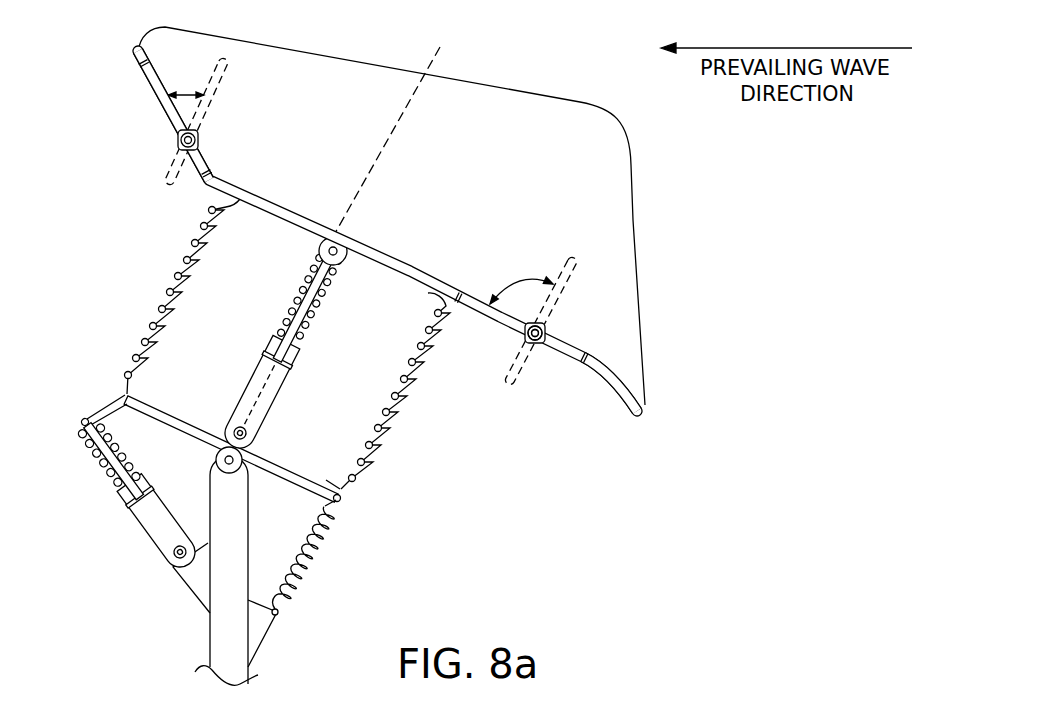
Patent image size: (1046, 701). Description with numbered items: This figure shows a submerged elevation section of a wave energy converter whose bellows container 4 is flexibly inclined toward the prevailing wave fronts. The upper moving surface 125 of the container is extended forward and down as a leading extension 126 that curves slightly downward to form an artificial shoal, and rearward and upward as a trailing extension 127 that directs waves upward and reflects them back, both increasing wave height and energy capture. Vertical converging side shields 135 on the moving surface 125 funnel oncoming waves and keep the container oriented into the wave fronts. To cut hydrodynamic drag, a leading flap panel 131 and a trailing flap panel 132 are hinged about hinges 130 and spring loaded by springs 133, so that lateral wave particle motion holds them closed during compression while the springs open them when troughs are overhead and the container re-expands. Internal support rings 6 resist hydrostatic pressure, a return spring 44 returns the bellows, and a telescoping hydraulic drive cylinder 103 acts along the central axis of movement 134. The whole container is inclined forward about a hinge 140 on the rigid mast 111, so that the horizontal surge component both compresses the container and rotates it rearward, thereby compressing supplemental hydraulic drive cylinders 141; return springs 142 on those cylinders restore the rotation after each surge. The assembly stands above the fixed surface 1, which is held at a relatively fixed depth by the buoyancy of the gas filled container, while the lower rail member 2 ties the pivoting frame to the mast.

The fixed surface 1 is at (179, 416).
The bow member 2 is at (268, 212).
The bellows container 4 is at (343, 393).
The support rings 6 is at (177, 273).
The return spring 44 is at (327, 308).
The hydraulic drive cylinder 103 is at (268, 426).
The mast 111 is at (208, 637).
The upper moving surface 125 is at (373, 251).
The leading extension 126 is at (613, 367).
The trailing extension 127 is at (134, 55).
The hinge 130 is at (542, 344).
The leading flap panel 131 is at (476, 298).
The trailing flap panel 132 is at (207, 148).
The spring 133 is at (176, 133).
The central axis of movement 134 is at (399, 131).
The side shields 135 is at (500, 88).
The hinge 140 is at (216, 459).
The supplemental hydraulic drive cylinders 141 is at (147, 532).
The return springs 142 is at (95, 455).